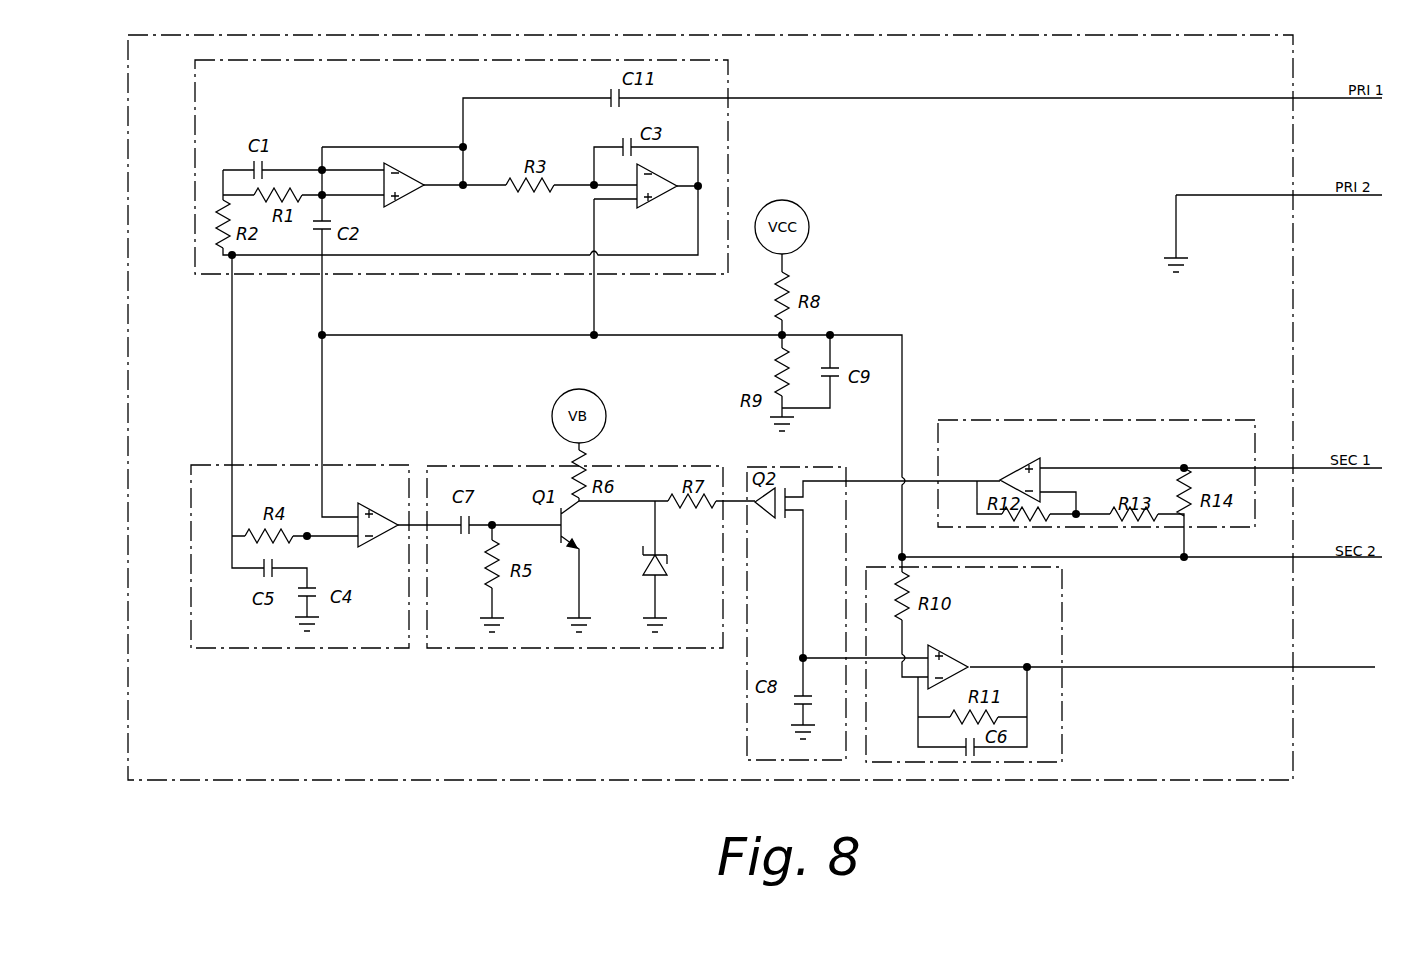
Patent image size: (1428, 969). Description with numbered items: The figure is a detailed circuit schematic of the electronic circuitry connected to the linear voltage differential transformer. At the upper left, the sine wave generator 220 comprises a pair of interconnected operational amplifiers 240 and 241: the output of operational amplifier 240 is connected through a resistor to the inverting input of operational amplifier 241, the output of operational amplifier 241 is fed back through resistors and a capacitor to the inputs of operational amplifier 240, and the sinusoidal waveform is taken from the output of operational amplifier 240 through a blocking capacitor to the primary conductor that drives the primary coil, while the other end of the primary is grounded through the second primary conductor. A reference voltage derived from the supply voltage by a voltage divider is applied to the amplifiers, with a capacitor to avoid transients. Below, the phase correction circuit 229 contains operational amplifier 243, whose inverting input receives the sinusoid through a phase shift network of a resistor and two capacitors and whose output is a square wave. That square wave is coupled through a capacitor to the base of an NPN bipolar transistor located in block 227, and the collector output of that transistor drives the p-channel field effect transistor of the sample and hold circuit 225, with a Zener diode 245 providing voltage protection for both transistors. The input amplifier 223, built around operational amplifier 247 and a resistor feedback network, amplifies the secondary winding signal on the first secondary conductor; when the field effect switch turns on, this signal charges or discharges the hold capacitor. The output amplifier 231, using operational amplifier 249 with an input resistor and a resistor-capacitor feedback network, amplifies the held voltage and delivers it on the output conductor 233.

The sine wave generator 220 is at (195, 130).
The input amplifier 223 is at (1075, 420).
The sample and hold circuit 225 is at (747, 730).
The transistor switch circuit 227 is at (490, 648).
The phase correction circuit 229 is at (191, 567).
The output amplifier 231 is at (1062, 737).
The output conductor 233 is at (1348, 665).
The operational amplifier 240 is at (398, 207).
The operational amplifier 241 is at (658, 207).
The operational amplifier 243 is at (392, 493).
The Zener diode 245 is at (667, 564).
The operational amplifier 247 is at (1030, 458).
The operational amplifier 249 is at (948, 652).